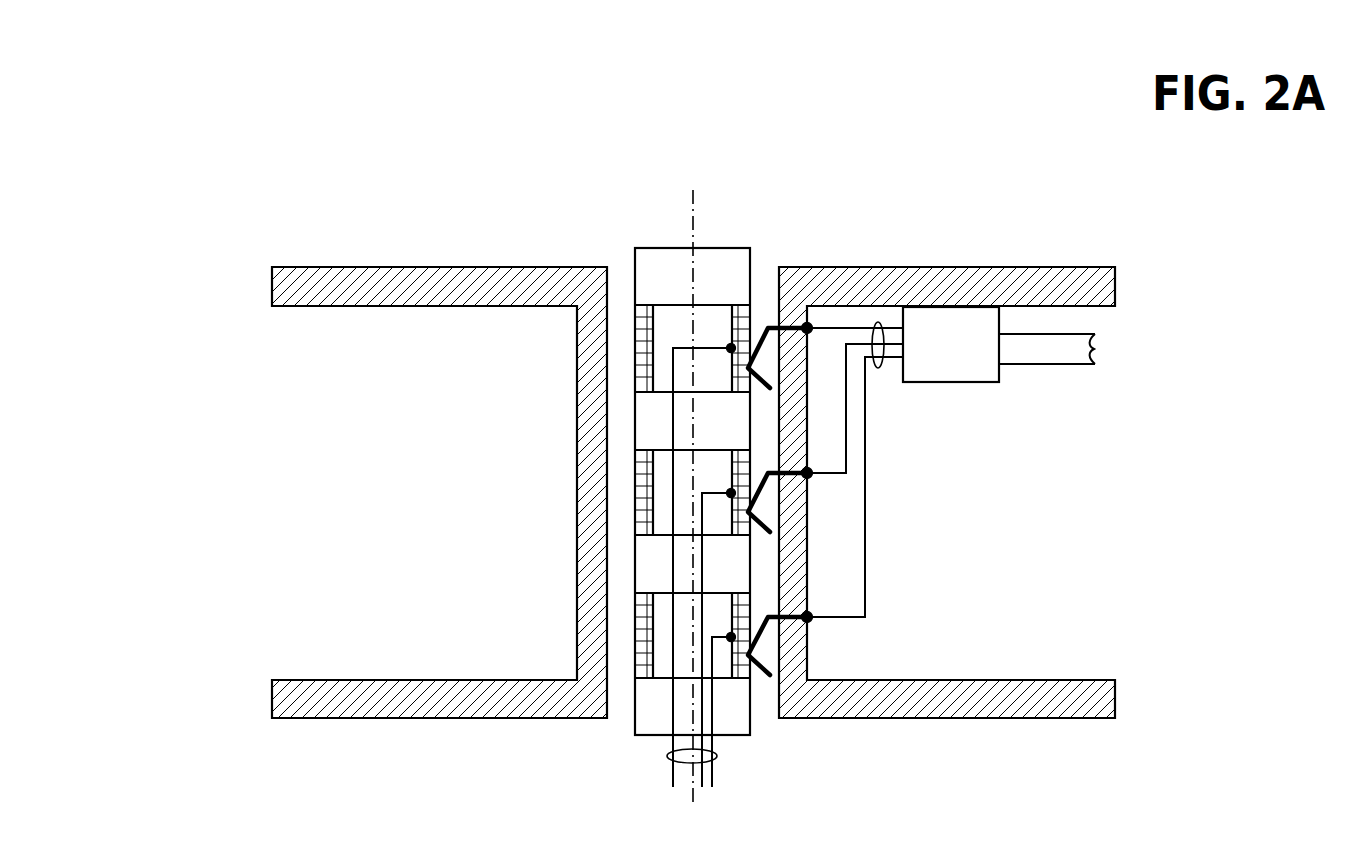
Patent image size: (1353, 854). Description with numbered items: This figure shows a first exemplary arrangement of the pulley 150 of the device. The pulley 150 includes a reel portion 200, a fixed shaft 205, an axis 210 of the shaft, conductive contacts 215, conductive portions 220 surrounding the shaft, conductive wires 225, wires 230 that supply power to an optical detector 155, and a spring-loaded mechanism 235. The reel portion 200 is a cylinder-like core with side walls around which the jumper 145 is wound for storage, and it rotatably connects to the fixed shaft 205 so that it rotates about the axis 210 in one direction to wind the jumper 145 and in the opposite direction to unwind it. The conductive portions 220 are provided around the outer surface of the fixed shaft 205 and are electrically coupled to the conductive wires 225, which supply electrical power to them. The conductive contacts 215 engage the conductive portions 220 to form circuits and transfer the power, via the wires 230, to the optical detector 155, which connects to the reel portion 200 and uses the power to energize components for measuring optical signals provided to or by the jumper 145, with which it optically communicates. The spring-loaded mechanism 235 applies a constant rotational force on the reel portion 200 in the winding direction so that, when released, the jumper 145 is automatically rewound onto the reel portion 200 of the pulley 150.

The pulley 150 is at (200, 106).
The reel portion 200 is at (383, 290).
The fixed shaft 205 is at (651, 265).
The axis 210 is at (693, 200).
The conductive contacts 215 is at (803, 326).
The conductive portions 220 is at (643, 359).
The conductive wires 225 is at (717, 757).
The wires 230 is at (878, 368).
The spring-loaded mechanism 235 is at (618, 288).
The optical detector 155 is at (951, 344).
The jumper 145 is at (1047, 348).